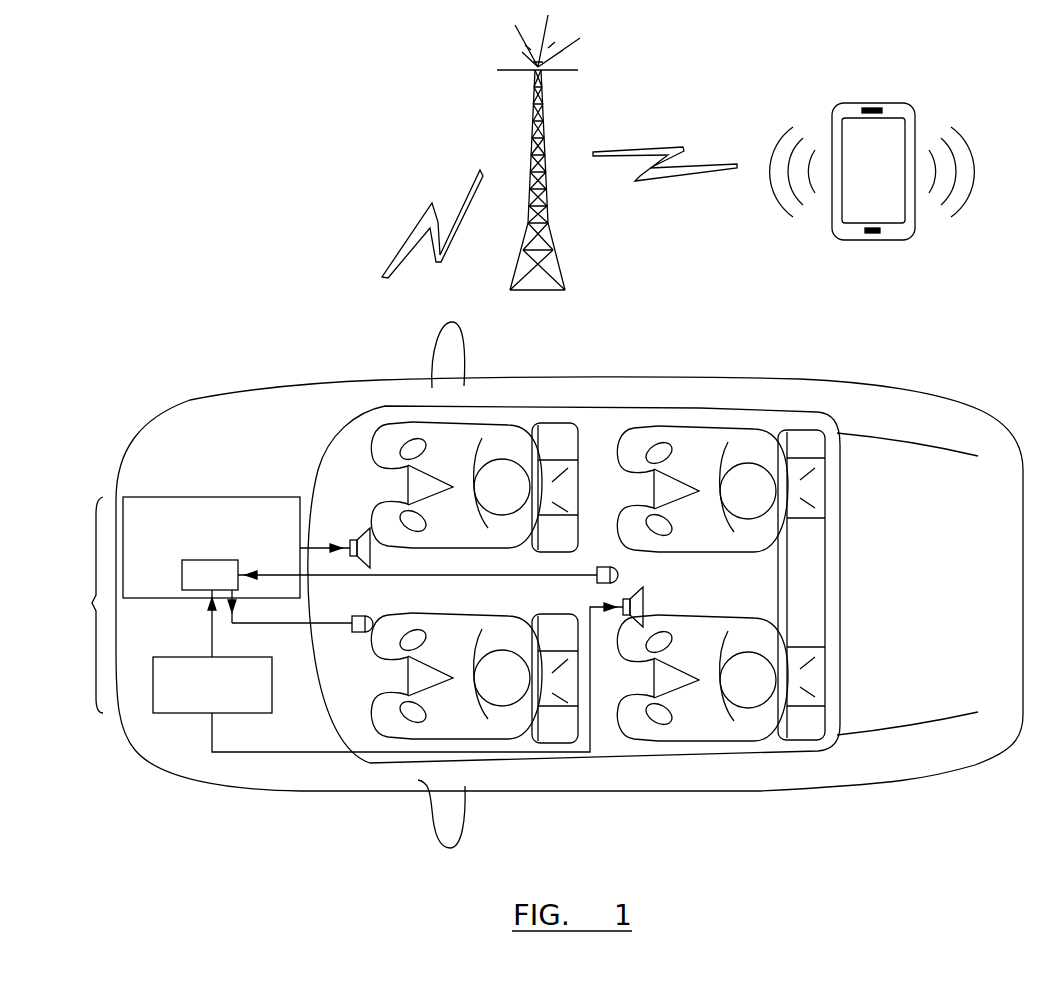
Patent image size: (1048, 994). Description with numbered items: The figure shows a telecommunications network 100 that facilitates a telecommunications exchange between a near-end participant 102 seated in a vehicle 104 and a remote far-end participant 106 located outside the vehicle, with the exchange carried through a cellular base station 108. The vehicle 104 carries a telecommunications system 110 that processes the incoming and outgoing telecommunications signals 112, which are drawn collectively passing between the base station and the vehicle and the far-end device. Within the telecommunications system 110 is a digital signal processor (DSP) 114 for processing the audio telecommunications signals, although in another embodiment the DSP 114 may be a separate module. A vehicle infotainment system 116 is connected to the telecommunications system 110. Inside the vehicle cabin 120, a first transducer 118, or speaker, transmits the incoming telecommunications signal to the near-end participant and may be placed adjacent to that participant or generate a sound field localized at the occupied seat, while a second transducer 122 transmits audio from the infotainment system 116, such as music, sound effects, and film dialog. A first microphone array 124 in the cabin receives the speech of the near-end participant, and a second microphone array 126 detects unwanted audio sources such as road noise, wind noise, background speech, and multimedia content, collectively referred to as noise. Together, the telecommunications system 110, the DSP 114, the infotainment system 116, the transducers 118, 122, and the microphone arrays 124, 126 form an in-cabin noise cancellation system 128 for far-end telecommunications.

The telecommunications network 100 is at (200, 172).
The near-end participant 102 is at (507, 705).
The vehicle 104 is at (912, 388).
The far-end participant 106 is at (873, 100).
The cellular base station 108 is at (553, 235).
The telecommunications system 110 is at (228, 497).
The telecommunications signals 112 is at (402, 240).
The digital signal processor (DSP) 114 is at (180, 582).
The vehicle infotainment system 116 is at (190, 713).
The first transducer 118 is at (360, 533).
The vehicle cabin 120 is at (626, 439).
The second transducer 122 is at (625, 615).
The first microphone array 124 is at (355, 640).
The second microphone array 126 is at (607, 565).
The in-cabin noise cancellation system 128 is at (73, 605).